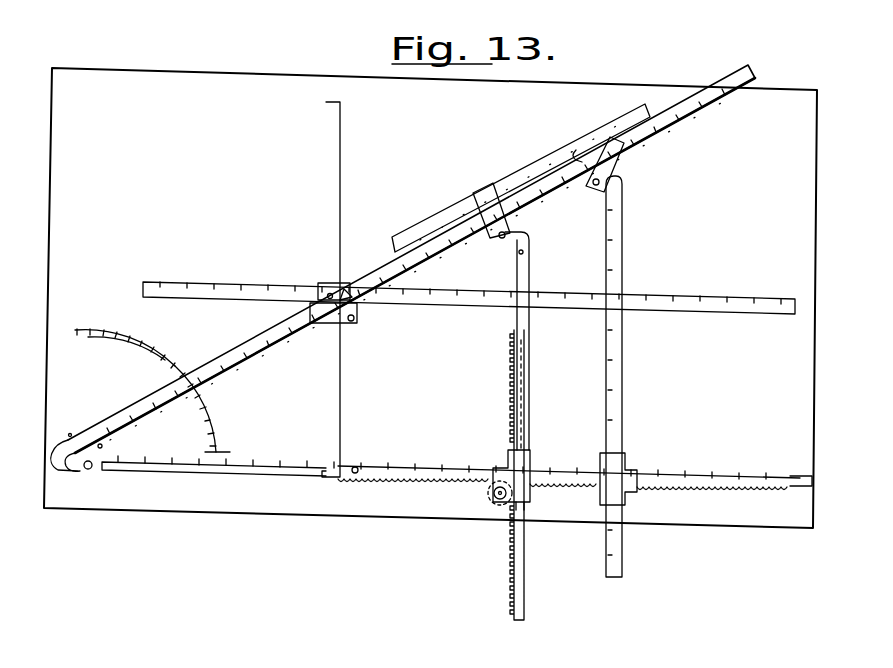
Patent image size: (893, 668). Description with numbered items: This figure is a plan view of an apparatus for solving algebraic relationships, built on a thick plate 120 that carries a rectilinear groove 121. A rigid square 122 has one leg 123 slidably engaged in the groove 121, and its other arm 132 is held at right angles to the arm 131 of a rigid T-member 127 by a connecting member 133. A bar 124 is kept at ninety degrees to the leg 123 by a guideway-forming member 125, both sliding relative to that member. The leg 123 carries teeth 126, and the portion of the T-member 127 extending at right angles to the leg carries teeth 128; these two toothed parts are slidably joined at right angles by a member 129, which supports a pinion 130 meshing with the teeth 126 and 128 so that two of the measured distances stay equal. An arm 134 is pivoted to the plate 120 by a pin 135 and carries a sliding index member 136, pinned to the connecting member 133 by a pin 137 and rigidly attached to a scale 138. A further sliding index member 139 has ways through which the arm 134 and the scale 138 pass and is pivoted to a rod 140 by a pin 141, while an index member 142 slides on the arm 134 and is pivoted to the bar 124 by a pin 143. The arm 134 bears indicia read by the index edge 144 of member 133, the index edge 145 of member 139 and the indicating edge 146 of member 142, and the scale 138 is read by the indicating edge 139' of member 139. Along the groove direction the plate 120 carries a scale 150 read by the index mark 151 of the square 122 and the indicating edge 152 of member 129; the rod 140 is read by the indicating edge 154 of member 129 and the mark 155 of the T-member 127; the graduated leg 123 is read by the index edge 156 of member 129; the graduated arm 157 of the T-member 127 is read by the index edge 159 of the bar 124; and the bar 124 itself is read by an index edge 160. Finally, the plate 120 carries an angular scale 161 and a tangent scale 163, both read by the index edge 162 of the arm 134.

The thick plate 120 is at (168, 76).
The rectilinear groove 121 is at (178, 468).
The rigid square 122 is at (338, 368).
The leg 123 is at (730, 476).
The bar 124 is at (622, 382).
The guideway-forming member 125 is at (618, 458).
The teeth 126 is at (666, 490).
The rigid T-member 127 is at (528, 380).
The teeth 128 is at (512, 382).
The member 129 is at (530, 450).
The pinion 130 is at (490, 494).
The arm 131 is at (270, 286).
The arm 132 is at (326, 216).
The connecting member 133 is at (318, 300).
The arm 134 is at (270, 338).
The pin 135 is at (82, 470).
The sliding index member 136 is at (316, 322).
The pin 137 is at (354, 320).
The scale 138 is at (402, 246).
The sliding index member 139 is at (521, 178).
The indicating edge 139' is at (475, 173).
The rod 140 is at (530, 270).
The pin 141 is at (492, 249).
The index member 142 is at (618, 166).
The pin 143 is at (593, 185).
The index edge 144 is at (344, 288).
The index edge 145 is at (474, 206).
The indicating edge 146 is at (576, 150).
The scale 150 is at (280, 462).
The index mark 151 is at (360, 470).
The indicating edge 152 is at (500, 454).
The indicating edge 154 is at (526, 492).
The mark 155 is at (526, 354).
The index edge 156 is at (530, 472).
The arm 157 is at (736, 304).
The index edge 159 is at (624, 296).
The index edge 160 is at (624, 312).
The scale 161 is at (100, 326).
The index edge 162 is at (192, 398).
The scale 163 is at (157, 398).